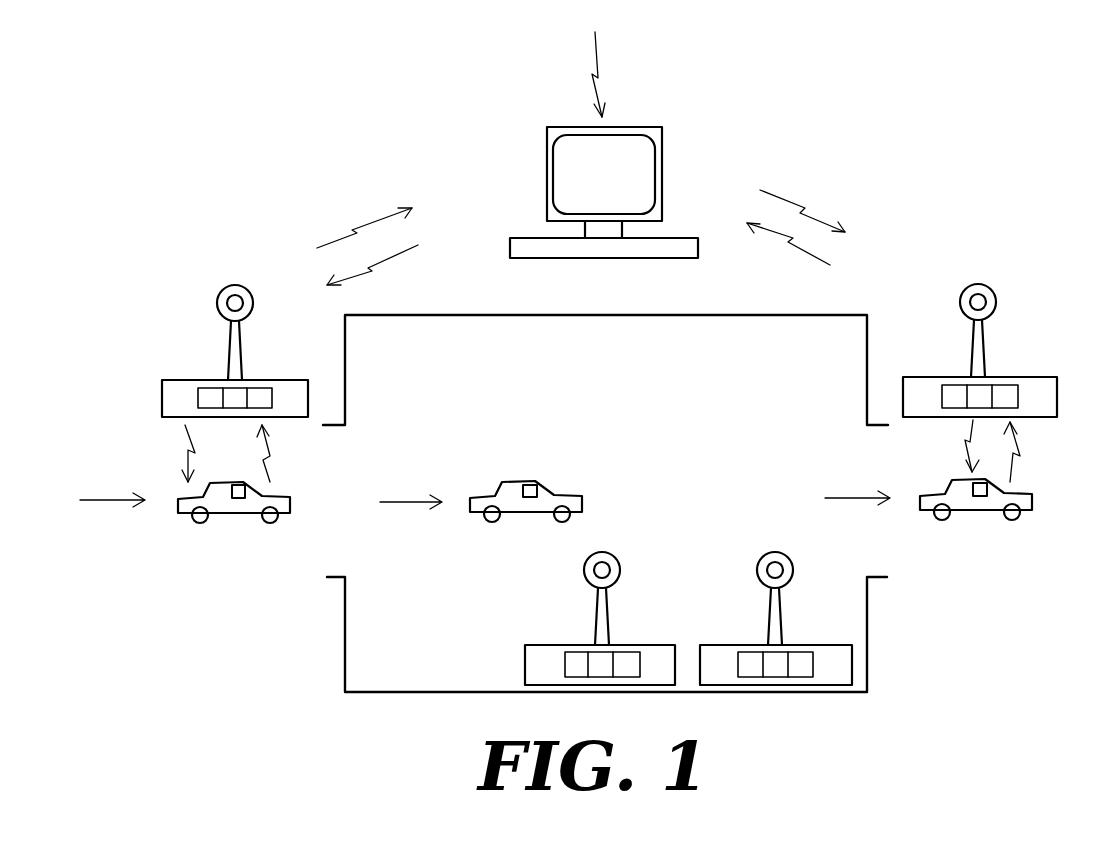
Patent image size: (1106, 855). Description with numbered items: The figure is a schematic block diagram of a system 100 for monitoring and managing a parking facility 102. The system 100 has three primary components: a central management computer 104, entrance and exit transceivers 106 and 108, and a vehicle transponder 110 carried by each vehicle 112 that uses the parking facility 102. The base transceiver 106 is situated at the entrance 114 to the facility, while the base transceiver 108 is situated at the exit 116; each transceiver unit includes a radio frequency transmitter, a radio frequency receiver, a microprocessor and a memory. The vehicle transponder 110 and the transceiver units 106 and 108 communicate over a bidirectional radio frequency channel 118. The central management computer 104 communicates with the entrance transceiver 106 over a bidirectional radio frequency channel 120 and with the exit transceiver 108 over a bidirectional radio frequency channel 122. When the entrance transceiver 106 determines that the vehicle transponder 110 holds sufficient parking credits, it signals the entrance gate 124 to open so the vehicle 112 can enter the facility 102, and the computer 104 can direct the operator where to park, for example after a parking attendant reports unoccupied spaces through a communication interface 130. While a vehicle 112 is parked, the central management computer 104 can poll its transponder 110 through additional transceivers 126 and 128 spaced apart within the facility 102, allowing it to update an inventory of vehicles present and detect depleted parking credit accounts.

The system 100 is at (933, 132).
The parking facility 102 is at (732, 308).
The central management computer 104 is at (640, 125).
The entrance transceiver 106 is at (218, 292).
The exit transceiver 108 is at (993, 290).
The vehicle transponder 110 is at (240, 485).
The vehicle 112 is at (183, 517).
The entrance 114 is at (315, 457).
The exit 116 is at (865, 442).
The bidirectional radio frequency channel 118 is at (183, 453).
The bidirectional radio frequency channel 120 is at (387, 265).
The bidirectional radio frequency channel 122 is at (805, 205).
The entrance gate 124 is at (368, 550).
The additional transceiver 126 is at (618, 556).
The additional transceiver 128 is at (768, 555).
The communication interface 130 is at (582, 86).